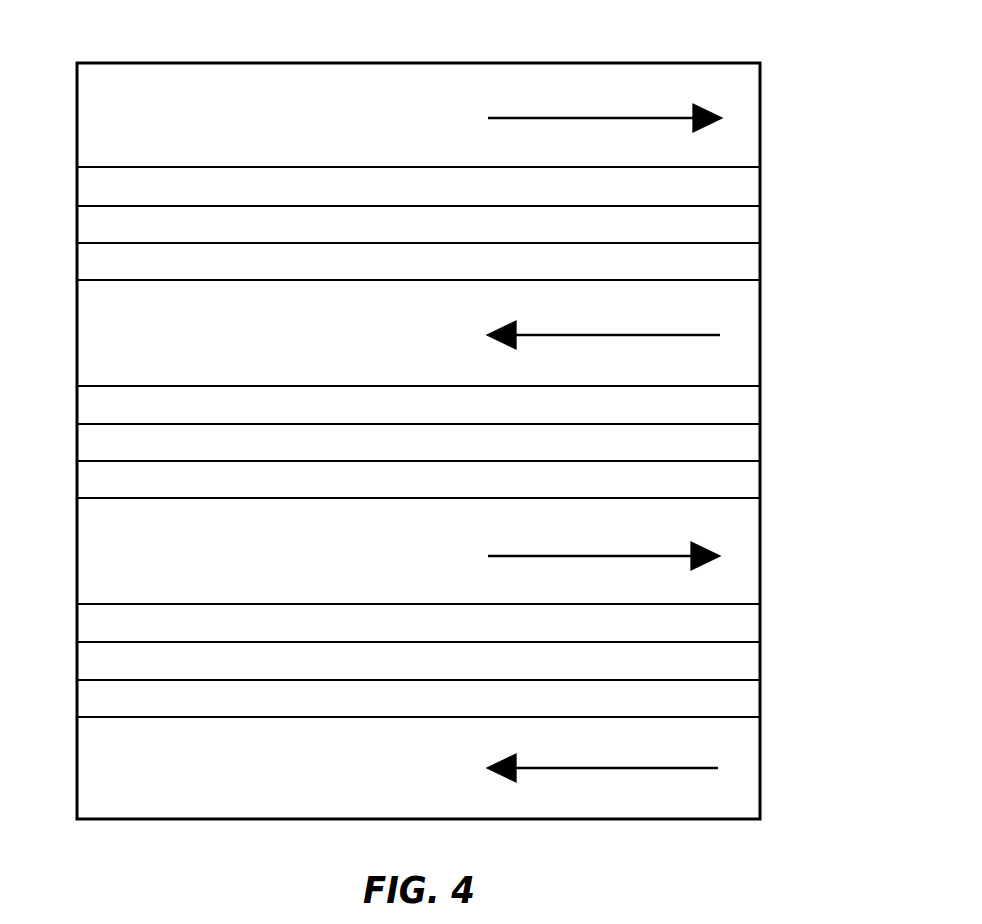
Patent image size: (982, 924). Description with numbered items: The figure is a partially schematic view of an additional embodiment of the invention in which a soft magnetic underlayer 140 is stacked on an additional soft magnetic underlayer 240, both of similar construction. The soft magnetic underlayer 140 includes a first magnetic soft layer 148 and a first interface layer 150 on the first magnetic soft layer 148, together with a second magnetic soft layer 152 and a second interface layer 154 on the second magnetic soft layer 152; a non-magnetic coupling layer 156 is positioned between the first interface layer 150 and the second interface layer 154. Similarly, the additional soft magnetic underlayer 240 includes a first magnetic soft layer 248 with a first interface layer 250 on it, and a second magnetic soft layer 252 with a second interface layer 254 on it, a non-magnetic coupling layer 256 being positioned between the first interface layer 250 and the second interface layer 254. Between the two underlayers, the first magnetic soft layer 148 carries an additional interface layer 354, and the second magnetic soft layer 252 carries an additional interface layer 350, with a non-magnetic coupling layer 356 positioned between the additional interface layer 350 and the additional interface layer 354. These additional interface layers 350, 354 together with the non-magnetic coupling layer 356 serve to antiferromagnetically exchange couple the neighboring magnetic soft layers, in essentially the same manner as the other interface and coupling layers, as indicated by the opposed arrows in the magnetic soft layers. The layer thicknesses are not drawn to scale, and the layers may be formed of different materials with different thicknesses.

The soft magnetic underlayer 140 is at (770, 63).
The additional soft magnetic underlayer 240 is at (766, 498).
The second magnetic soft layer 152 is at (436, 131).
The second interface layer 154 is at (436, 198).
The non-magnetic coupling layer 156 is at (436, 234).
The first interface layer 150 is at (436, 273).
The first magnetic soft layer 148 is at (436, 348).
The additional interface layer 354 is at (436, 416).
The non-magnetic coupling layer 356 is at (436, 453).
The additional interface layer 350 is at (436, 490).
The second magnetic soft layer 252 is at (436, 569).
The second interface layer 254 is at (436, 636).
The non-magnetic coupling layer 256 is at (436, 674).
The first interface layer 250 is at (436, 711).
The first magnetic soft layer 248 is at (436, 779).